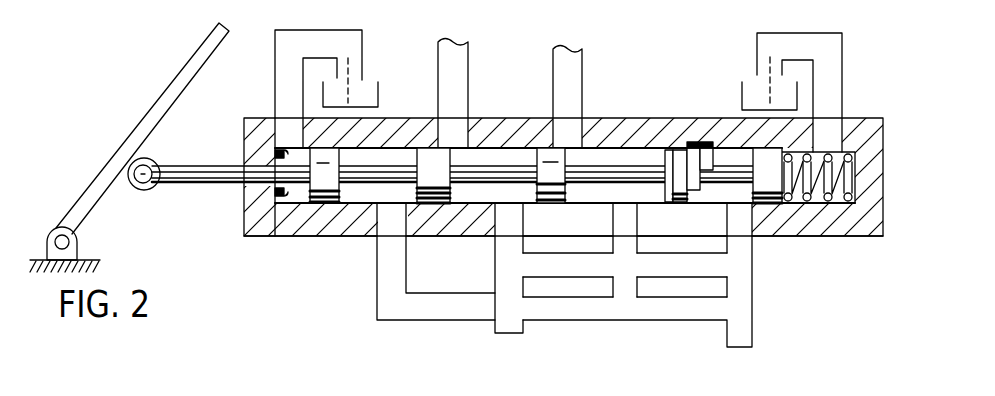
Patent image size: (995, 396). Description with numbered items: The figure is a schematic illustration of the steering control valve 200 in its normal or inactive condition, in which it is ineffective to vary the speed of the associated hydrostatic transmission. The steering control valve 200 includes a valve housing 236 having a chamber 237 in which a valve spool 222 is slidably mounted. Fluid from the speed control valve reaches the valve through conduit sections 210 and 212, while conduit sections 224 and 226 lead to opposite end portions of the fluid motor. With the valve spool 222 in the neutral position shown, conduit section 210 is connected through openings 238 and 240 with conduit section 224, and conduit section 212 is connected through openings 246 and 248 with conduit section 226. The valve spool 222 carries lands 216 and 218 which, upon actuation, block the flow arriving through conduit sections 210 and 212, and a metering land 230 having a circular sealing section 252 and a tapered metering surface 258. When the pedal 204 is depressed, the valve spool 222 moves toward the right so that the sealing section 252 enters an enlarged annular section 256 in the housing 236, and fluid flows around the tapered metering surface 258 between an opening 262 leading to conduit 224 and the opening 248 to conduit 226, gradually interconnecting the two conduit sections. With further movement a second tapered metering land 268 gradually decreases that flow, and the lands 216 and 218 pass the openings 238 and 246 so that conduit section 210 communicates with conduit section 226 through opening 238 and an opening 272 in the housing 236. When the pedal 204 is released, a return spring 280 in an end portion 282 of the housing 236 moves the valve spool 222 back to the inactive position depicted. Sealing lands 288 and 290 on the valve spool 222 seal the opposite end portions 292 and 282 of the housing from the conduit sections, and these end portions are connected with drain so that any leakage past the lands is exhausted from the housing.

The steering control valve 200 is at (708, 22).
The pedal 204 is at (133, 132).
The conduit section 210 is at (453, 53).
The conduit section 212 is at (560, 49).
The land 216 is at (437, 157).
The land 218 is at (587, 212).
The valve spool 222 is at (494, 165).
The conduit section 224 is at (504, 332).
The conduit section 226 is at (752, 347).
The metering land 230 is at (690, 135).
The valve housing 236 is at (240, 238).
The chamber 237 is at (275, 190).
The opening 238 is at (508, 144).
The opening 240 is at (369, 256).
The opening 246 is at (577, 157).
The opening 248 is at (597, 240).
The sealing section 252 is at (664, 152).
The enlarged annular section 256 is at (710, 232).
The tapered metering surface 258 is at (665, 160).
The opening 262 is at (753, 238).
The second tapered metering land 268 is at (703, 212).
The opening 272 is at (392, 203).
The return spring 280 is at (839, 155).
The end portion 282 is at (838, 204).
The sealing land 288 is at (285, 222).
The sealing land 290 is at (764, 164).
The end portion 292 is at (277, 155).